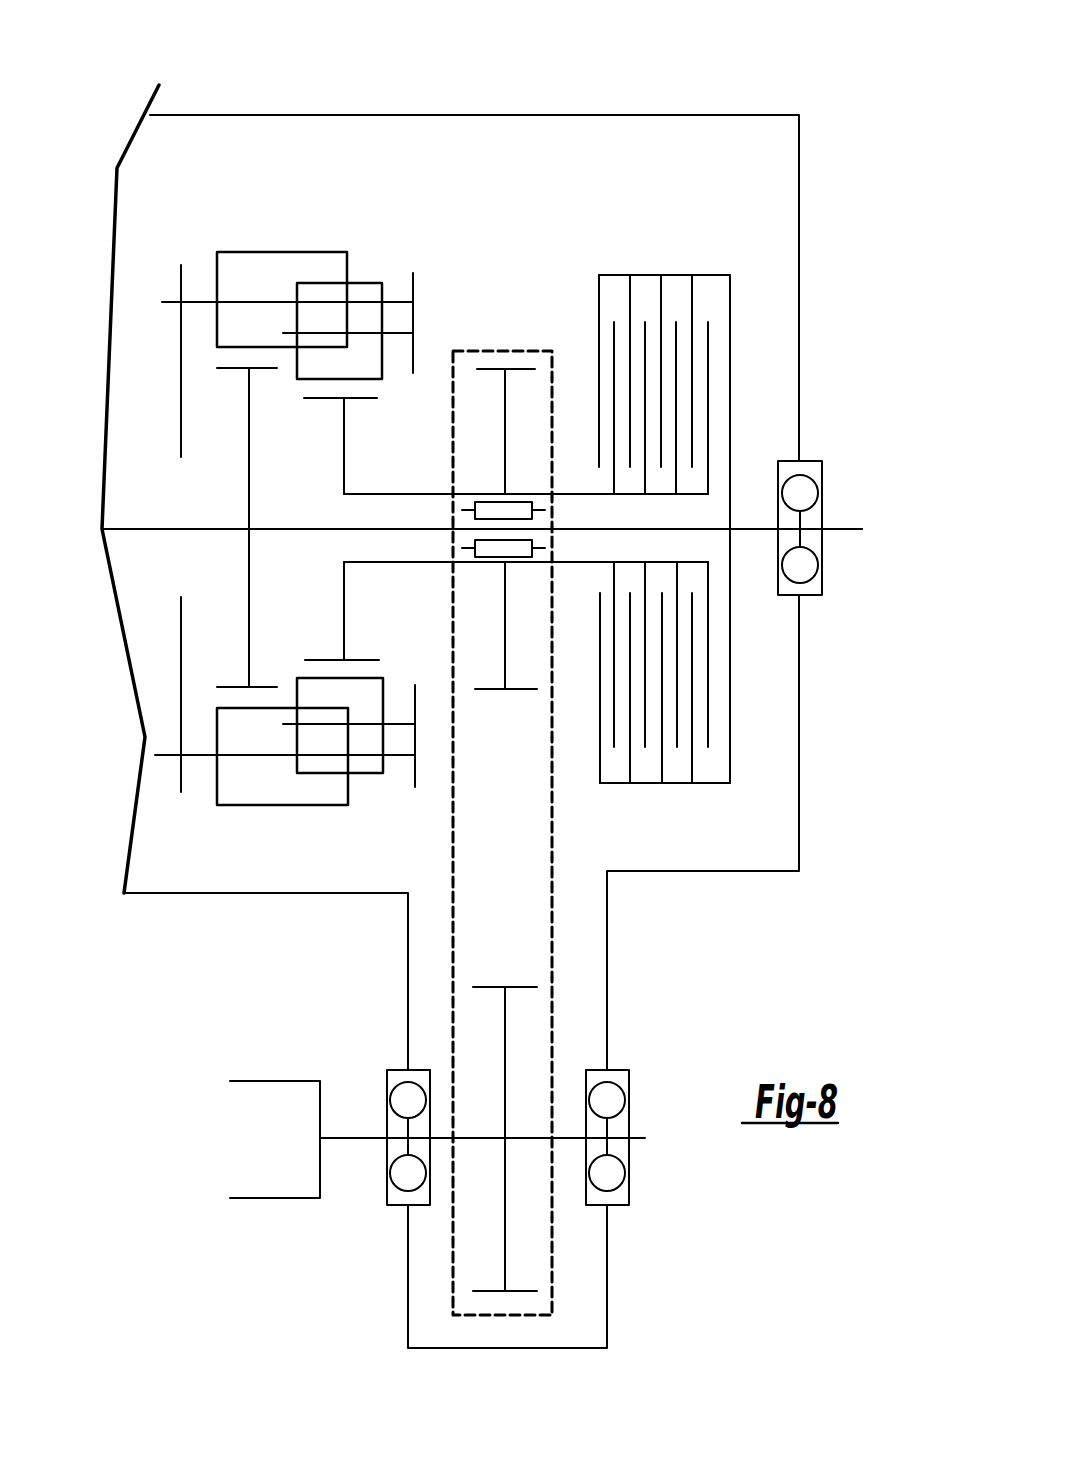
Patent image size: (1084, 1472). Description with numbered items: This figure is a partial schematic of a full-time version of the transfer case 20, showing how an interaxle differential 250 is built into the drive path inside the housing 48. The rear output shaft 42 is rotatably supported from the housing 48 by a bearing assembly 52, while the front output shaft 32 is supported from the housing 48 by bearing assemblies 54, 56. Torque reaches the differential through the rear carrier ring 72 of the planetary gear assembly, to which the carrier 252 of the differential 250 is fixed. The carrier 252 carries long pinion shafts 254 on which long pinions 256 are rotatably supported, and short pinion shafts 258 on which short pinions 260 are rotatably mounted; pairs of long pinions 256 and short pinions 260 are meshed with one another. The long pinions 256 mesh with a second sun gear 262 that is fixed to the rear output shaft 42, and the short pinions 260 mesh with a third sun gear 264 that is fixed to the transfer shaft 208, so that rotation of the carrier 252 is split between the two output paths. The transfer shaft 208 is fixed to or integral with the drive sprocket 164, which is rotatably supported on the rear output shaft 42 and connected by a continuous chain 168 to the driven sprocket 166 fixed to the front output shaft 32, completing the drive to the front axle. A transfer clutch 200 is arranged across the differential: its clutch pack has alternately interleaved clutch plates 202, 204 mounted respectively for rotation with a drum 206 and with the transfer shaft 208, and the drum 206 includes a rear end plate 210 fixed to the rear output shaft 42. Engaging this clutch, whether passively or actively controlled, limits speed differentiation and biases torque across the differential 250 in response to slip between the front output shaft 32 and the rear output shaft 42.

The transfer case 20 is at (558, 64).
The housing 48 is at (752, 115).
The front output shaft 32 is at (367, 1138).
The rear output shaft 42 is at (840, 529).
The bearing assembly 52 is at (800, 568).
The bearing assembly 54 is at (400, 1180).
The bearing assembly 56 is at (615, 1095).
The rear carrier ring 72 is at (181, 425).
The drive sprocket 164 is at (503, 425).
The driven sprocket 166 is at (505, 1030).
The continuous chain 168 is at (552, 948).
The transfer clutch 200 is at (639, 236).
The clutch plates 202 is at (690, 770).
The clutch plates 204 is at (613, 355).
The drum 206 is at (748, 222).
The transfer shaft 208 is at (425, 494).
The rear end plate 210 is at (731, 722).
The interaxle differential 250 is at (398, 212).
The carrier 252 is at (424, 322).
The long pinion shafts 254 is at (197, 302).
The long pinions 256 is at (313, 253).
The short pinion shafts 258 is at (398, 332).
The short pinions 260 is at (378, 697).
The second sun gear 262 is at (249, 424).
The third sun gear 264 is at (345, 448).